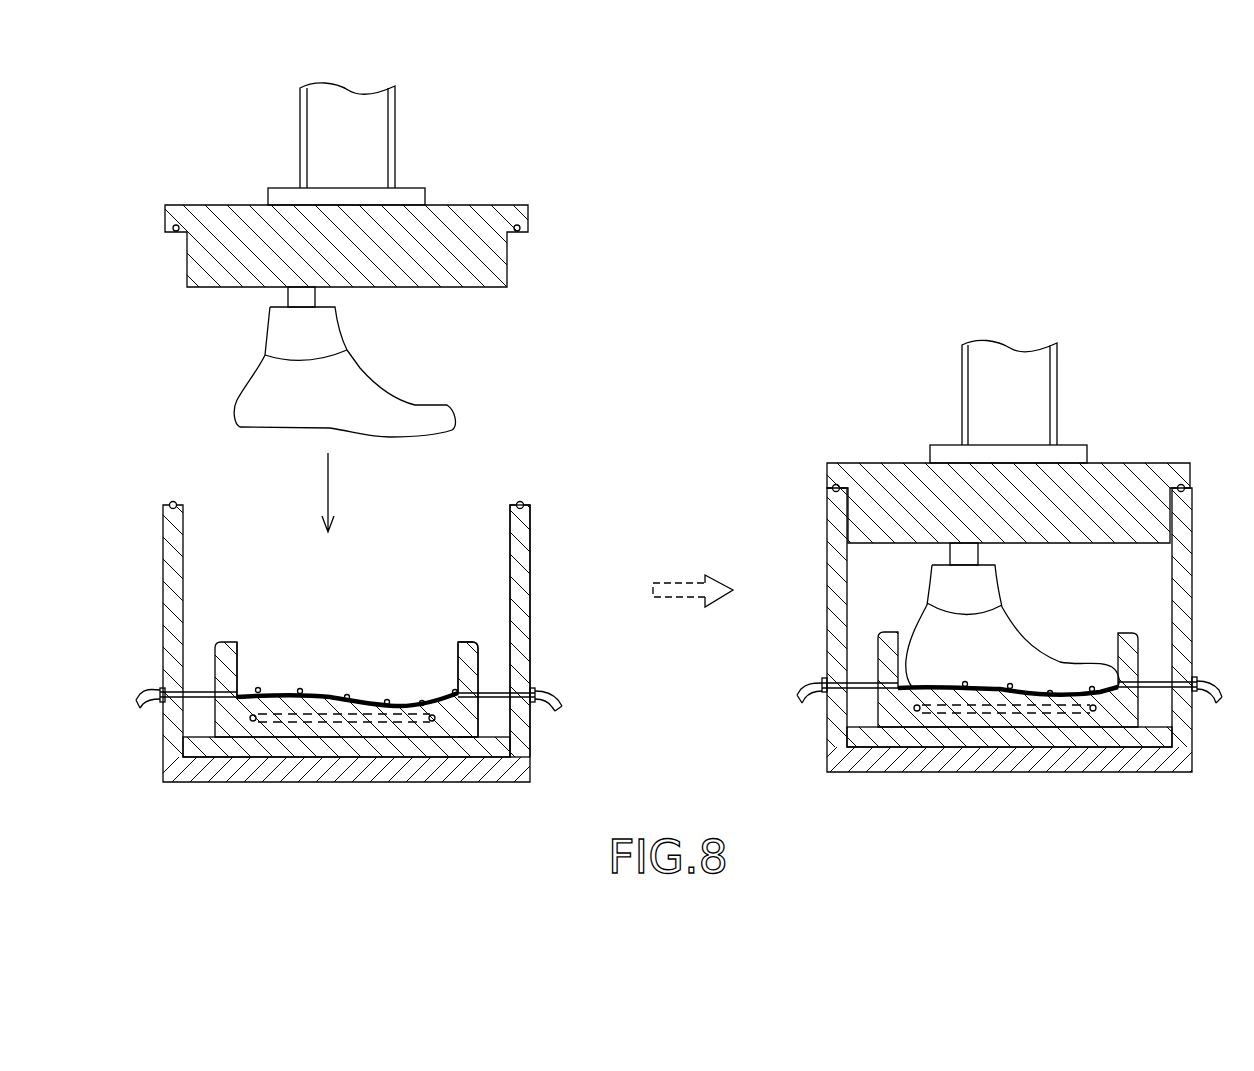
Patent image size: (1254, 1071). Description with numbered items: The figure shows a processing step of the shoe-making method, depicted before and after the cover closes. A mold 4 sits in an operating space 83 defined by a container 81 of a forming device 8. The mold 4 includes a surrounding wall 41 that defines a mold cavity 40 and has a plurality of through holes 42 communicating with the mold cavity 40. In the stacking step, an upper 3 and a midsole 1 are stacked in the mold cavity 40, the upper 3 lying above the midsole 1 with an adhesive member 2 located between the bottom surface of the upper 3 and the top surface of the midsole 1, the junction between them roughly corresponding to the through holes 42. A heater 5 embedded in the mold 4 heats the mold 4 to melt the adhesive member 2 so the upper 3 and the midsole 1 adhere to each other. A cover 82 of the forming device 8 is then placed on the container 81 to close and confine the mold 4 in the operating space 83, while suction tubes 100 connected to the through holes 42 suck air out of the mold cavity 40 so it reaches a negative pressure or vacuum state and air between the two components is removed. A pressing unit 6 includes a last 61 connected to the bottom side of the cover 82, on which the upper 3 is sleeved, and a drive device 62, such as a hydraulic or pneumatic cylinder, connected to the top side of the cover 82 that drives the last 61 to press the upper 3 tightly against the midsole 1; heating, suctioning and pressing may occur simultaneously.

The midsole 1 is at (240, 700).
The adhesive member 2 is at (900, 683).
The upper 3 is at (413, 407).
The mold 4 is at (472, 645).
The mold cavity 40 is at (437, 657).
The surrounding wall 41 is at (475, 678).
The through hole 42 is at (258, 690).
The heater 5 is at (297, 723).
The pressing unit 6 is at (413, 103).
The last 61 is at (338, 330).
The drive device 62 is at (398, 135).
The forming device 8 is at (540, 535).
The container 81 is at (525, 598).
The cover 82 is at (528, 218).
The operating space 83 is at (218, 555).
The suction tube 100 is at (542, 707).